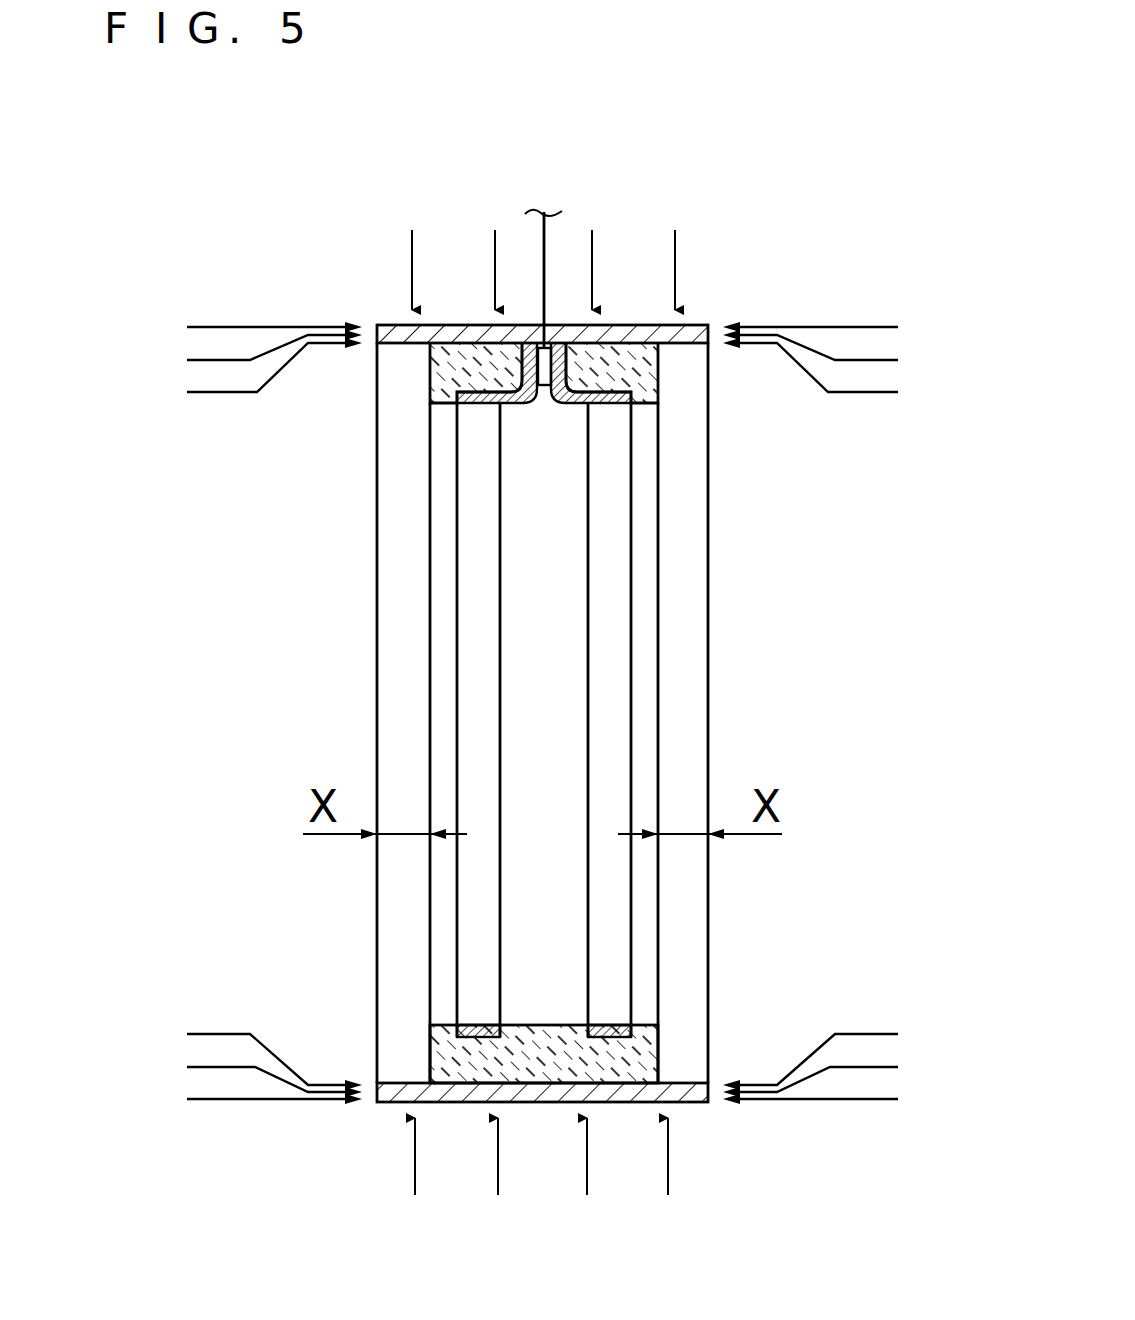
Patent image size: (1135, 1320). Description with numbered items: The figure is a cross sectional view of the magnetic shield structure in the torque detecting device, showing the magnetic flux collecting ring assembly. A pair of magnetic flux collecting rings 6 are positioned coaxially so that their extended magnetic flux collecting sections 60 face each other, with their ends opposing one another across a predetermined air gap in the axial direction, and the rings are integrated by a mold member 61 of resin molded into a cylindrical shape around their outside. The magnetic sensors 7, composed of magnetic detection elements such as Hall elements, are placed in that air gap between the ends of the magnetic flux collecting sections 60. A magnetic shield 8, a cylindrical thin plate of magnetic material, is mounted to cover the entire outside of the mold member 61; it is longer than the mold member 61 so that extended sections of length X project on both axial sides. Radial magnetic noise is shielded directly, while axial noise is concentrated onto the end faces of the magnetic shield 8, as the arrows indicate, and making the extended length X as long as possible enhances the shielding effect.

The magnetic flux collecting ring 6 is at (473, 405).
The magnetic sensor 7 is at (550, 393).
The magnetic shield 8 is at (690, 325).
The magnetic flux collecting section 60 is at (520, 360).
The mold member 61 is at (645, 1050).